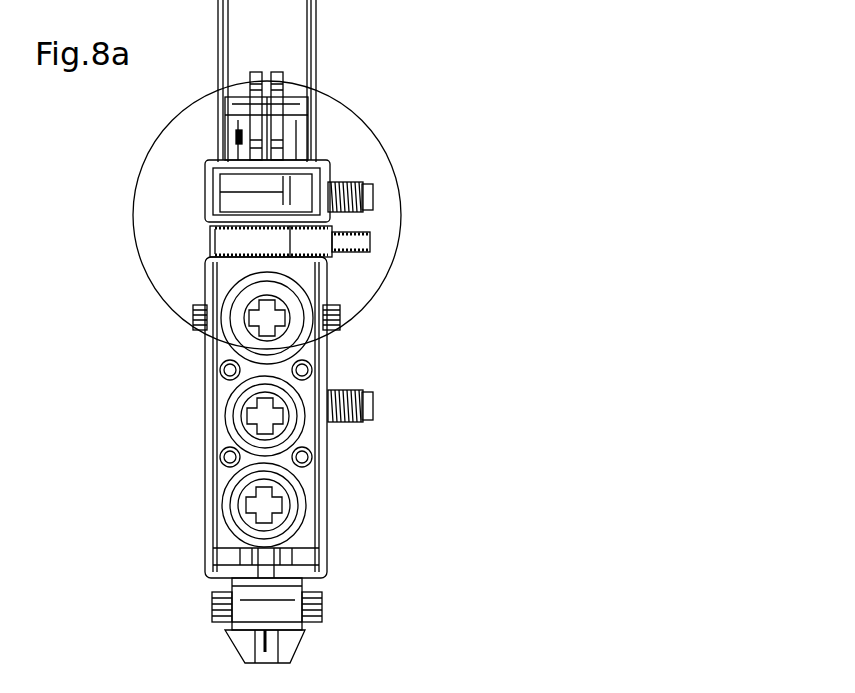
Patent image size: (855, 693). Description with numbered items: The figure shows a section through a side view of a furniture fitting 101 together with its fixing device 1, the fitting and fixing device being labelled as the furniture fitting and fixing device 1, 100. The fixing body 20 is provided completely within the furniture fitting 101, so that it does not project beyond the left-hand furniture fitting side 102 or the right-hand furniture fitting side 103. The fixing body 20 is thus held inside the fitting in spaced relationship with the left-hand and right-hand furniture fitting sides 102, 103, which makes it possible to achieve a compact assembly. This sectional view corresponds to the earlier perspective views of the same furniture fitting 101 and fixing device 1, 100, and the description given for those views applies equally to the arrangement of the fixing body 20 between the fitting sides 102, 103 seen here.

The fixing device 1 is at (572, 271).
The furniture fitting 100 is at (375, 188).
The fixing body 20 is at (335, 255).
The furniture fitting 101 is at (447, 331).
The left-hand furniture fitting side 102 is at (330, 483).
The right-hand furniture fitting side 103 is at (205, 460).